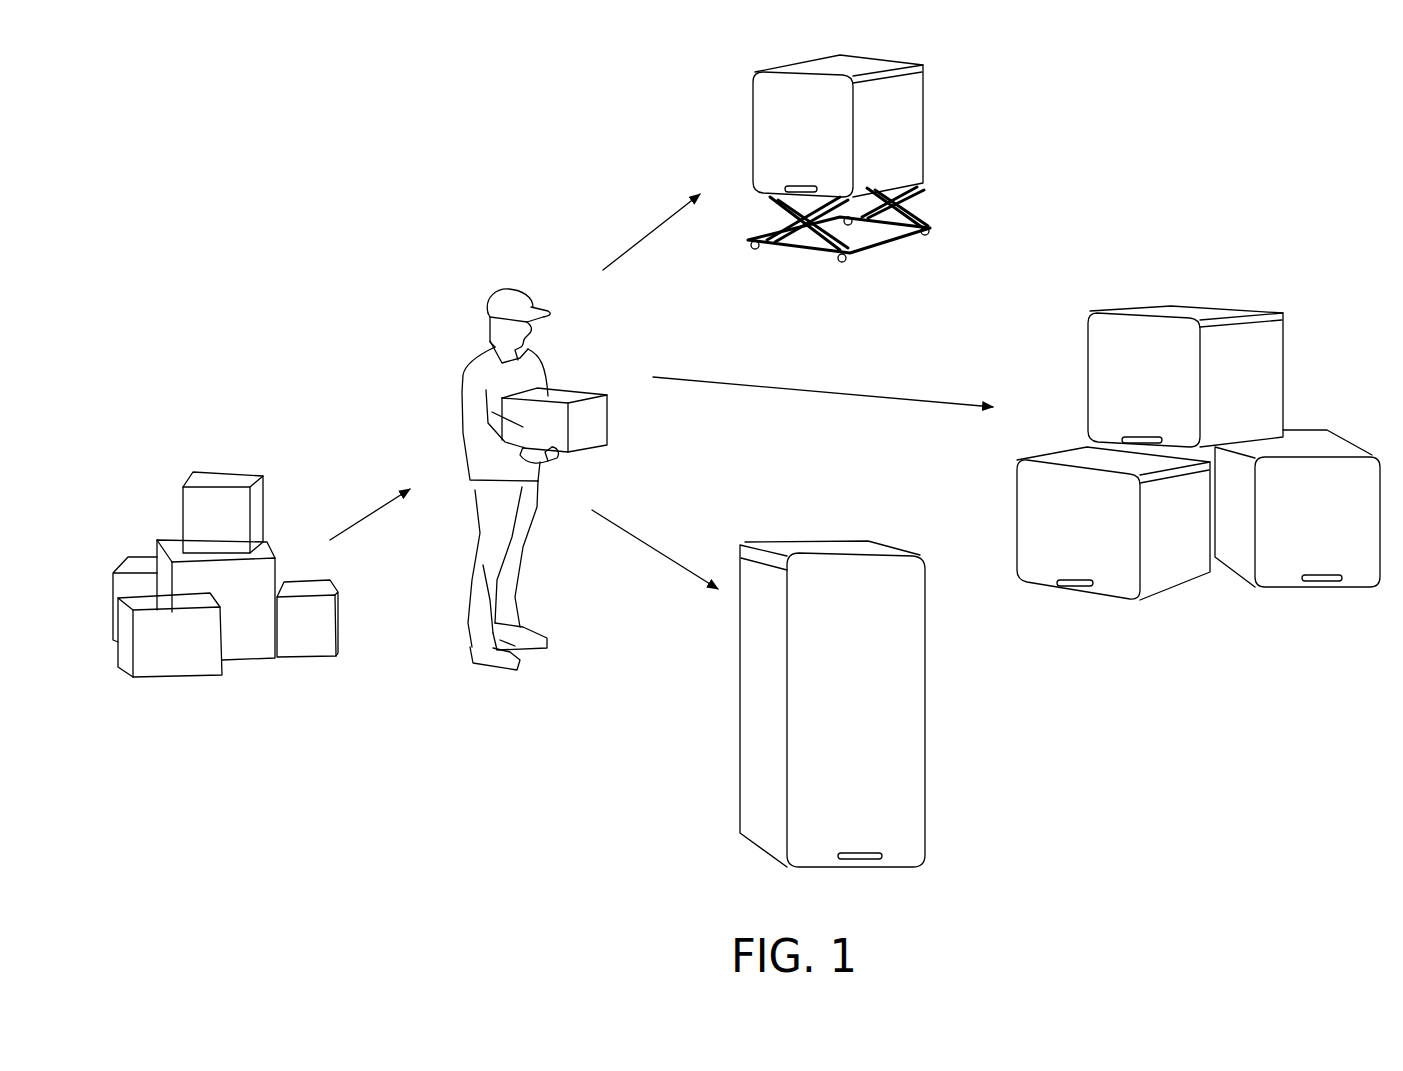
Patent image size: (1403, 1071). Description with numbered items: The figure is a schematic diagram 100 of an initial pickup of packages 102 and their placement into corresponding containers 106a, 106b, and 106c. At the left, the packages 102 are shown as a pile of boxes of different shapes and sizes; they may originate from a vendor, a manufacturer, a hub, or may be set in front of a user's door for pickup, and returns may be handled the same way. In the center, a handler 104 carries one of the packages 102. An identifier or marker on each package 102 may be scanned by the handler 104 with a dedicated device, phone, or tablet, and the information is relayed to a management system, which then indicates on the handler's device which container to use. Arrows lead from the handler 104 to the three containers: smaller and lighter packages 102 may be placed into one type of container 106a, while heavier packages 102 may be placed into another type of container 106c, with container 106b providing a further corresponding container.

The schematic diagram 100 is at (358, 128).
The packages 102 is at (216, 494).
The handler 104 is at (474, 401).
The container 106a is at (910, 130).
The container 106b is at (1342, 467).
The container 106c is at (903, 735).